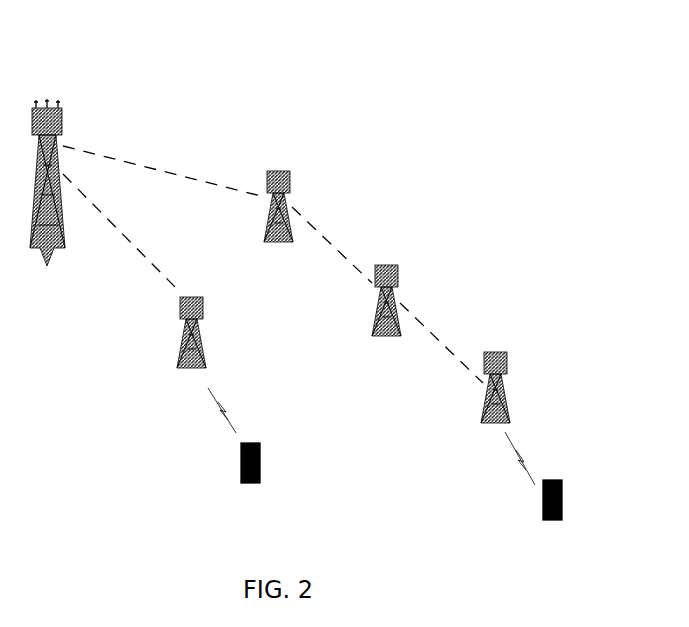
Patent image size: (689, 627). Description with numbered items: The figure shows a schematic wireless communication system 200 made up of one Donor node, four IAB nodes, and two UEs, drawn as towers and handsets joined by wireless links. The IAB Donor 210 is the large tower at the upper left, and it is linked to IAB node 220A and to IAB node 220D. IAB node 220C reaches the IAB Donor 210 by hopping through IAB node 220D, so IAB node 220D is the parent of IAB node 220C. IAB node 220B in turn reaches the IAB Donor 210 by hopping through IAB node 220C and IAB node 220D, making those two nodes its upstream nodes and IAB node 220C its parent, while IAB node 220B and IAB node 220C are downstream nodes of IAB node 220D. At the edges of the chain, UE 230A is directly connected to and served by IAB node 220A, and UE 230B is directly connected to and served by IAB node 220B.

The wireless communication system 200 is at (509, 125).
The IAB Donor 210 is at (46, 199).
The IAB node 220A is at (184, 346).
The IAB node 220B is at (470, 391).
The IAB node 220C is at (384, 313).
The IAB node 220D is at (280, 221).
The UE 230A is at (237, 451).
The UE 230B is at (525, 478).